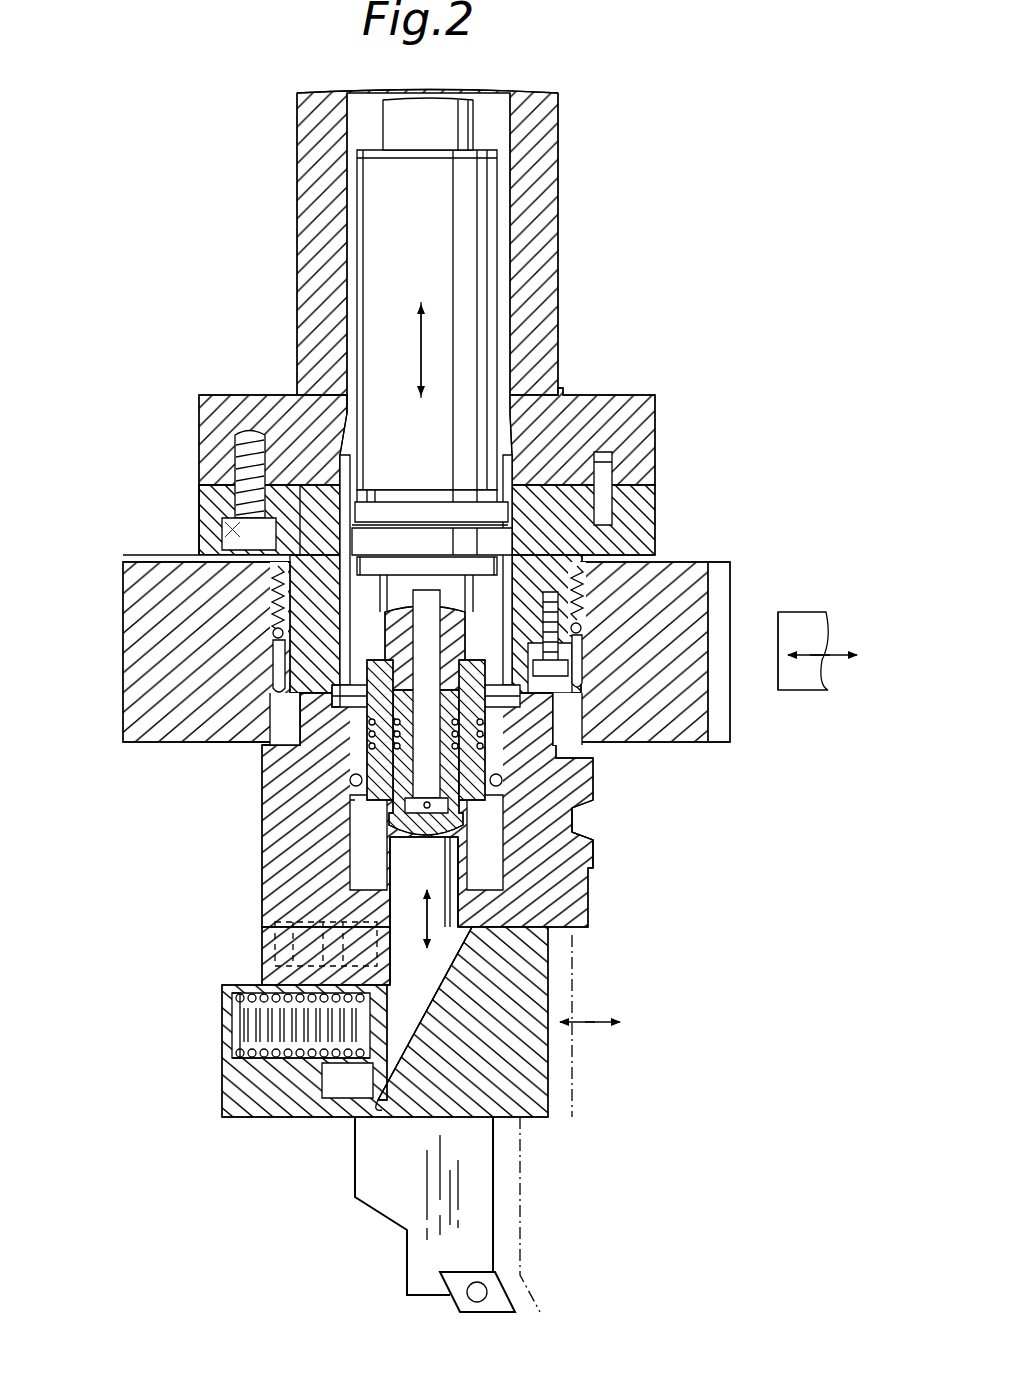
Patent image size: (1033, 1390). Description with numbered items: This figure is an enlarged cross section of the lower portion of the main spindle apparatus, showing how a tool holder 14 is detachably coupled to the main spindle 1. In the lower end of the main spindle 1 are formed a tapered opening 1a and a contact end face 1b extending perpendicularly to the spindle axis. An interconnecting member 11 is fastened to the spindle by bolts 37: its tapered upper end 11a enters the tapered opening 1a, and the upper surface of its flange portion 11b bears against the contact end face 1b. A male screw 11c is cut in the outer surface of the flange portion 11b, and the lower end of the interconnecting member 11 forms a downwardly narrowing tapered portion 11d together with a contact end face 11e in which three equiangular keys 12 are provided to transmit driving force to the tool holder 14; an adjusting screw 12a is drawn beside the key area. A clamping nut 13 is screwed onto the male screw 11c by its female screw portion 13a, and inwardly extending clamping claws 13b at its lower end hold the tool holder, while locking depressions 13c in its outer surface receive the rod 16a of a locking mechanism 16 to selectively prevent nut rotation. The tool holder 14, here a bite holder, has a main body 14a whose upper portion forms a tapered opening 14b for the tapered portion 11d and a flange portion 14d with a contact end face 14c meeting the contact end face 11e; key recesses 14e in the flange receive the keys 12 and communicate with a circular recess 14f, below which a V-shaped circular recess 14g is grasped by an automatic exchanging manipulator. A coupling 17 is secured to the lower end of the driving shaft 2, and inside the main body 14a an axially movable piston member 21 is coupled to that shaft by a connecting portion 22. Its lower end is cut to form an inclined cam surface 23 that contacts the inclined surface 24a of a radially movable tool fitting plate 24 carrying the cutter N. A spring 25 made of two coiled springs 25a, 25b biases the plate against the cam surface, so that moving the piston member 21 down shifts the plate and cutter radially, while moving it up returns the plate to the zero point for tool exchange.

The main spindle 1 is at (565, 134).
The tapered opening 1a is at (520, 428).
The contact end face 1b is at (640, 493).
The driving shaft 2 is at (408, 128).
The interconnecting member 11 is at (662, 507).
The tapered upper end 11a is at (318, 650).
The flange portion 11b is at (200, 500).
The male screw 11c is at (263, 565).
The tapered portion 11d is at (298, 690).
The contact end face 11e is at (274, 632).
The key 12 is at (562, 655).
The adjusting screw 12a is at (575, 618).
The clamping nut 13 is at (697, 558).
The female screw portion 13a is at (272, 600).
The clamping claw 13b is at (212, 744).
The locking depression 13c is at (722, 704).
The tool holder 14 is at (600, 912).
The main body 14a is at (566, 857).
The tapered opening 14b is at (263, 746).
The contact end face 14c is at (302, 470).
The flange portion 14d is at (272, 660).
The key recess 14e is at (590, 668).
The circular recess 14f is at (334, 670).
The V-shaped circular recess 14g is at (352, 786).
The locking mechanism 16 is at (838, 600).
The rod 16a is at (800, 692).
The coupling 17 is at (432, 230).
The piston member 21 is at (408, 904).
The connecting portion 22 is at (362, 792).
The inclined cam surface 23 is at (400, 1020).
The tool fitting plate 24 is at (512, 1105).
The inclined surface 24a is at (425, 985).
The spring 25 is at (253, 1027).
The coiled spring 25a is at (250, 1030).
The coiled spring 25b is at (290, 1060).
The bolt 37 is at (246, 462).
The cutter N is at (497, 1296).